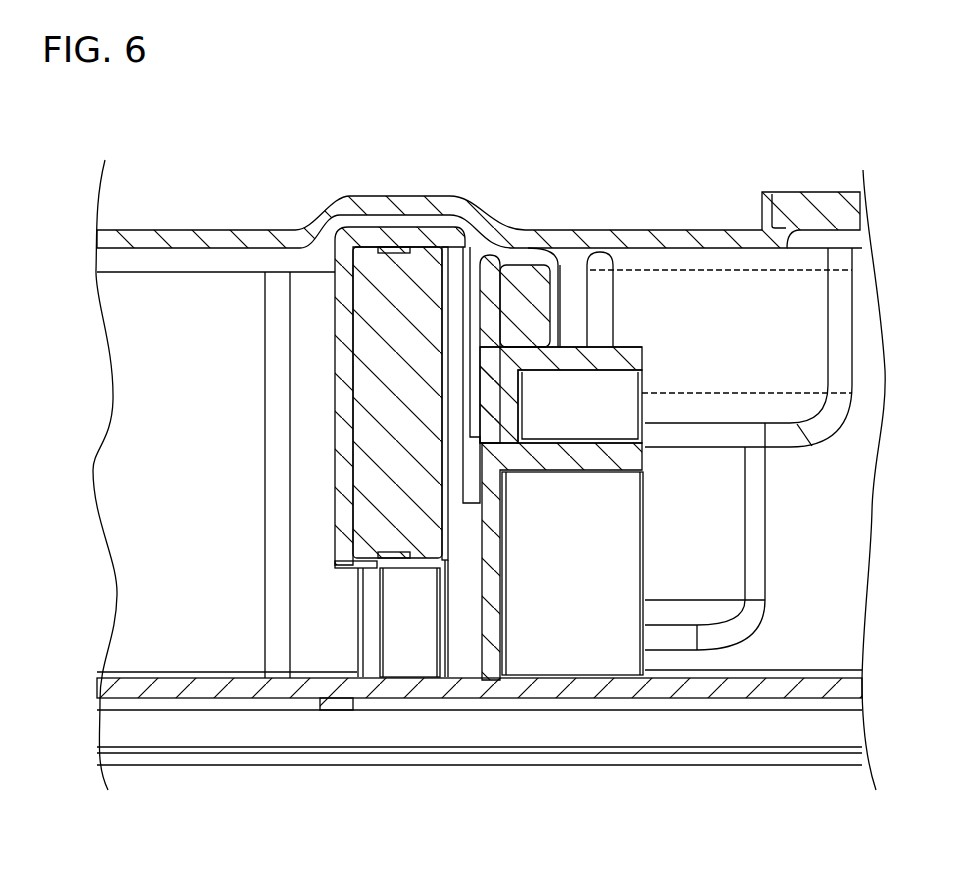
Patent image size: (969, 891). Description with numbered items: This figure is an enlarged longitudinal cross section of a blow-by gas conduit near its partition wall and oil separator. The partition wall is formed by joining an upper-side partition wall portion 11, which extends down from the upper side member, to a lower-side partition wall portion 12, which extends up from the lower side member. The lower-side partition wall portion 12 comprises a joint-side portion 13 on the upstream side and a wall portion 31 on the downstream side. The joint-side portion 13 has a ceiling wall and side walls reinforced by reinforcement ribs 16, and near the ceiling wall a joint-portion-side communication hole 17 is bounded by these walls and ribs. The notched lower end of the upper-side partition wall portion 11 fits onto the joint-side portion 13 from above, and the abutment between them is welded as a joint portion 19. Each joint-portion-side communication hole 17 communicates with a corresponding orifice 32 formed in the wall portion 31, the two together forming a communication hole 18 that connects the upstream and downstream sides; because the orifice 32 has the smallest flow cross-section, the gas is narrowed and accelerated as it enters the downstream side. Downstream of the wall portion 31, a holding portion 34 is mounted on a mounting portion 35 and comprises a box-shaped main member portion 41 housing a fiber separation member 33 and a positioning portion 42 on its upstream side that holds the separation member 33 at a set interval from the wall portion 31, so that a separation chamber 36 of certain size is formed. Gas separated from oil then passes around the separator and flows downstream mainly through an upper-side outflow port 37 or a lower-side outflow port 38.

The upper-side partition wall portion 11 is at (618, 345).
The lower-side partition wall portion 12 is at (645, 570).
The joint-side portion 13 is at (647, 525).
The reinforcement ribs 16 is at (600, 475).
The joint-portion-side communication hole 17 is at (617, 397).
The communication hole 18 is at (642, 397).
The joint portion 19 is at (568, 347).
The wall portion 31 is at (520, 283).
The orifice 32 is at (548, 445).
The separation member 33 is at (438, 245).
The holding portion 34 is at (297, 240).
The mounting portion 35 is at (358, 627).
The separation chamber 36 is at (458, 290).
The upper-side outflow port 37 is at (383, 218).
The lower-side outflow port 38 is at (399, 650).
The main member portion 41 is at (330, 462).
The positioning portion 42 is at (448, 535).